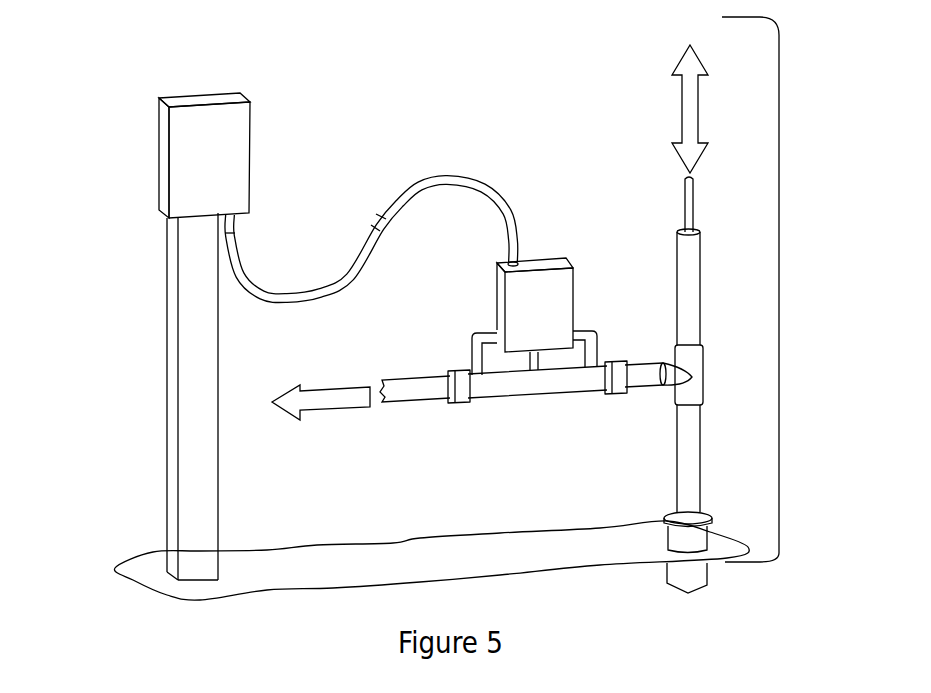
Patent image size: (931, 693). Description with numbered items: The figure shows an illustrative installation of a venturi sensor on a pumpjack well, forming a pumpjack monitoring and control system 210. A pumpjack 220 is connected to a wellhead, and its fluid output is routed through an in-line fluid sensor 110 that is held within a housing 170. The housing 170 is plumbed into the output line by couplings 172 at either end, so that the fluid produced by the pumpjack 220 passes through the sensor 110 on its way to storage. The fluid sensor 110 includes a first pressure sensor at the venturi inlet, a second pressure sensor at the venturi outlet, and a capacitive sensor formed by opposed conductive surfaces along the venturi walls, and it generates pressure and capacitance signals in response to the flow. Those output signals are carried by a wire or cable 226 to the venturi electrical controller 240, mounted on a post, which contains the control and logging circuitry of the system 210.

The pumpjack monitoring and control system 210 is at (490, 79).
The venturi electrical controller 240 is at (187, 189).
The wire or cable 226 is at (298, 290).
The fluid sensor 110 is at (535, 383).
The housing 170 is at (632, 408).
The couplings 172 is at (458, 387).
The pumpjack 220 is at (779, 330).